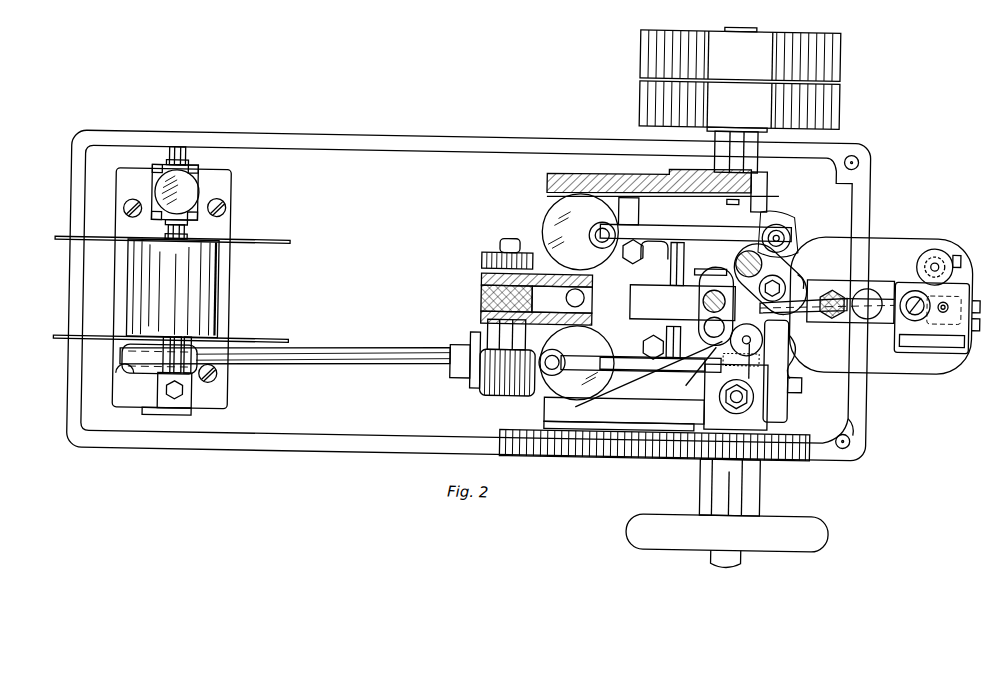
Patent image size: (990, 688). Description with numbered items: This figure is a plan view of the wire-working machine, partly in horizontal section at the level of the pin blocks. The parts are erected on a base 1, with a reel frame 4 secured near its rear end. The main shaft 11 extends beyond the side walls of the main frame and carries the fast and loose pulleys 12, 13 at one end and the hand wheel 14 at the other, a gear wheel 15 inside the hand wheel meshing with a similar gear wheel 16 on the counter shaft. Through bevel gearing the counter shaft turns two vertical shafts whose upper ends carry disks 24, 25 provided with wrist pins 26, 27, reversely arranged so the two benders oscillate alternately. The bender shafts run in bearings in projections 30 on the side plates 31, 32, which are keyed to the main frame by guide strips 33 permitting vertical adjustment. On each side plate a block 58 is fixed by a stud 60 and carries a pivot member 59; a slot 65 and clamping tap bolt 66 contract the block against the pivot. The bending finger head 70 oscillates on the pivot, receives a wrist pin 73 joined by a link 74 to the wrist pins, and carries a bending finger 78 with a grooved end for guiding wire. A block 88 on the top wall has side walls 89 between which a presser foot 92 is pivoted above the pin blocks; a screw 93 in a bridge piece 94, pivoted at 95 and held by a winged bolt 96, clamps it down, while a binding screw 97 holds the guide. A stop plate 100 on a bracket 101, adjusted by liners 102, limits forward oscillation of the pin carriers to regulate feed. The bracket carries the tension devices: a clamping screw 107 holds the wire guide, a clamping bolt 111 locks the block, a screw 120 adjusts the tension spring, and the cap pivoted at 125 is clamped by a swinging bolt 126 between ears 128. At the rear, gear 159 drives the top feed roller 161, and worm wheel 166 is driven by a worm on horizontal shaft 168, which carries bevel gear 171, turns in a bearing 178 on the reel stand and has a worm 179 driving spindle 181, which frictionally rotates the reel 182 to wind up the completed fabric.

The base 1 is at (264, 452).
The reel frame 4 is at (236, 193).
The main shaft 11 is at (760, 148).
The fast pulley 12 is at (740, 53).
The loose pulley 13 is at (739, 105).
The hand wheel 14 is at (766, 528).
The gear wheel 15 is at (821, 437).
The gear wheel 16 is at (513, 424).
The disk 24 is at (567, 369).
The disk 25 is at (592, 239).
The wrist pin 26 is at (576, 362).
The wrist pin 27 is at (580, 231).
The projections 30 is at (553, 392).
The side plate 31 is at (633, 381).
The side plate 32 is at (606, 164).
The guide strips 33 is at (749, 190).
The block 58 is at (736, 397).
The pivot member 59 is at (735, 356).
The stud 60 is at (726, 390).
The slot 65 is at (783, 371).
The clamping tap bolt 66 is at (797, 342).
The bending finger head 70 is at (797, 245).
The wrist pin 73 is at (776, 211).
The link 74 is at (676, 287).
The bending finger 78 is at (807, 268).
The block 88 is at (643, 300).
The side walls 89 is at (657, 300).
The presser foot 92 is at (683, 303).
The screw 93 is at (698, 327).
The bridge piece 94 is at (652, 361).
The pivot 95 is at (695, 377).
The winged bolt 96 is at (722, 254).
The binding screw 97 is at (670, 258).
The stop plate 100 is at (826, 321).
The bracket 101 is at (882, 224).
The liners 102 is at (826, 330).
The clamping screw 107 is at (845, 284).
The clamping bolt 111 is at (876, 282).
The screw 120 is at (918, 302).
The pivot 125 is at (975, 335).
The swinging bolt 126 is at (934, 234).
The ears 128 is at (960, 240).
The gear 159 is at (492, 243).
The top feed roller 161 is at (483, 290).
The worm wheel 166 is at (472, 371).
The horizontal shaft 168 is at (309, 344).
The bevel gear 171 is at (459, 338).
The bearing 178 is at (155, 384).
The worm 179 is at (184, 336).
The spindle 181 is at (182, 156).
The reel 182 is at (225, 275).